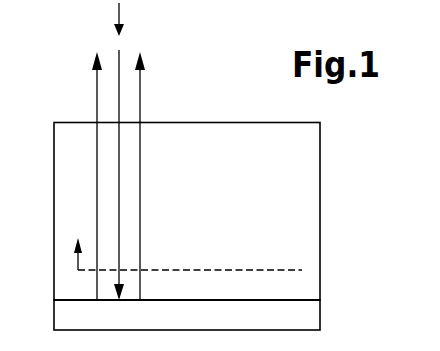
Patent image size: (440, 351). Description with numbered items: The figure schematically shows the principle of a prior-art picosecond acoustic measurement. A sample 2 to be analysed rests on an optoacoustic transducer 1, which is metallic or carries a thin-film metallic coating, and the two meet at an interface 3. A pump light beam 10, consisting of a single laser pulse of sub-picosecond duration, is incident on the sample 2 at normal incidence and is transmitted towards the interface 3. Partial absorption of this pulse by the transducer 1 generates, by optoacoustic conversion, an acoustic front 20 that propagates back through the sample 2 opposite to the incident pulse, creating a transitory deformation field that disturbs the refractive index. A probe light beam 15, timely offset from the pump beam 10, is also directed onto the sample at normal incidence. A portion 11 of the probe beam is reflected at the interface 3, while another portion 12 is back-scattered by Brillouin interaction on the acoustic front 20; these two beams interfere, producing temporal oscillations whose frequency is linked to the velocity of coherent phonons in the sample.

The optoacoustic transducer 1 is at (310, 313).
The sample 2 is at (320, 170).
The interface 3 is at (294, 300).
The pump light beam 10 is at (113, 50).
The reflected portion of the probe beam 11 is at (97, 100).
The back-scattered portion of the probe beam 12 is at (140, 107).
The probe light beam 15 is at (119, 13).
The acoustic front 20 is at (270, 270).